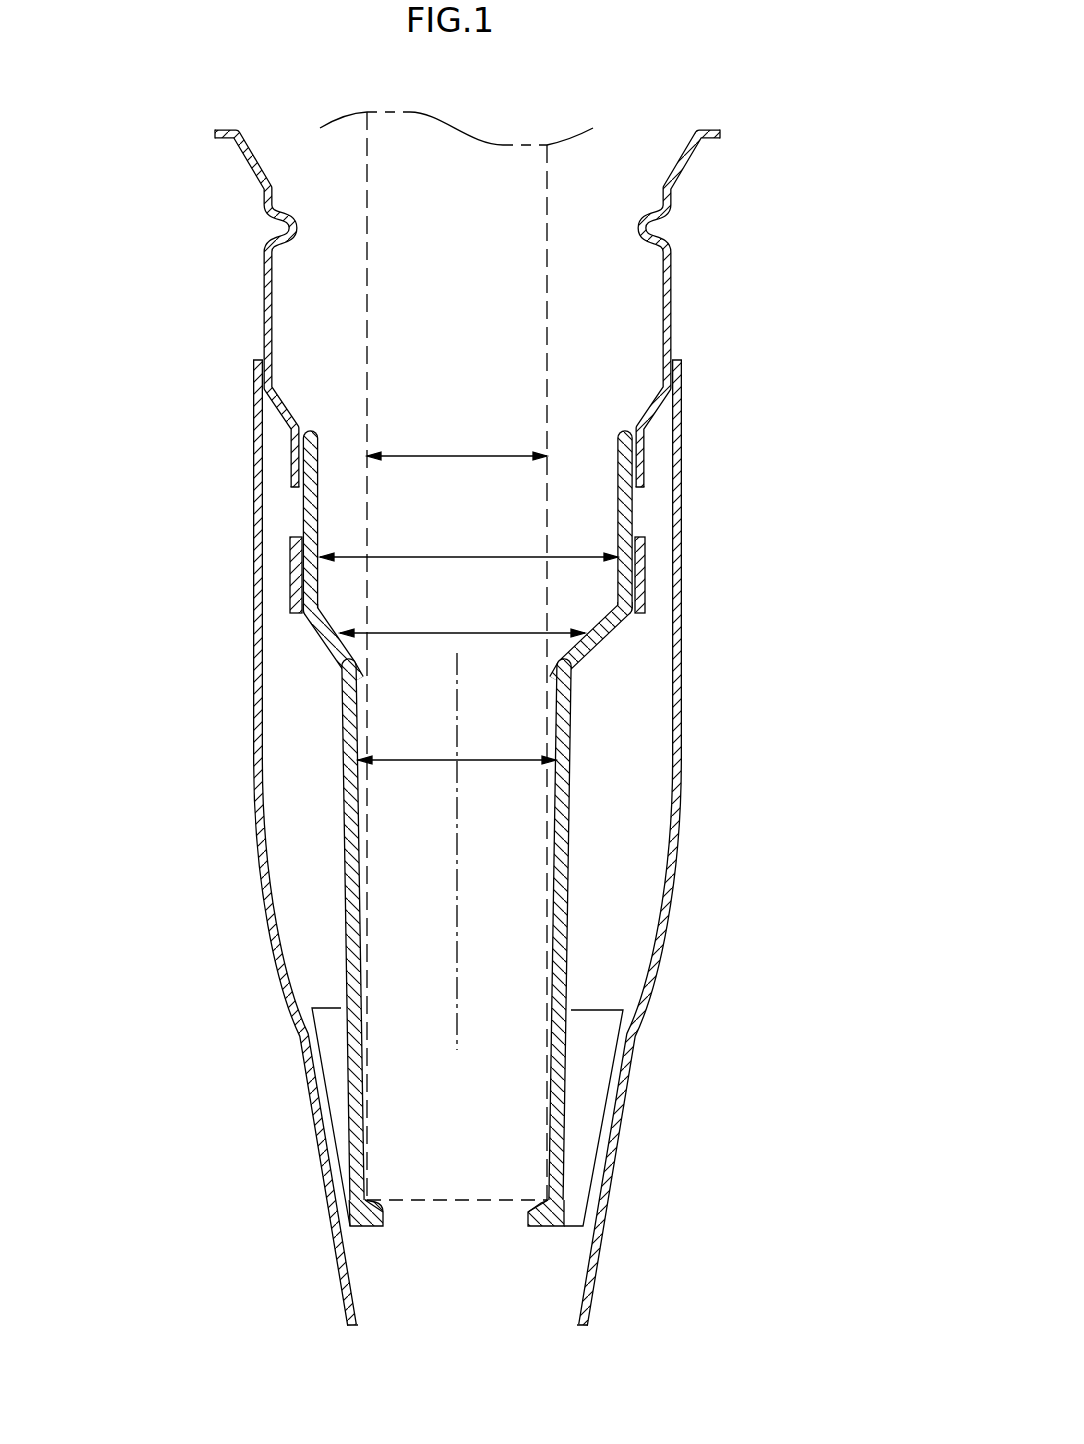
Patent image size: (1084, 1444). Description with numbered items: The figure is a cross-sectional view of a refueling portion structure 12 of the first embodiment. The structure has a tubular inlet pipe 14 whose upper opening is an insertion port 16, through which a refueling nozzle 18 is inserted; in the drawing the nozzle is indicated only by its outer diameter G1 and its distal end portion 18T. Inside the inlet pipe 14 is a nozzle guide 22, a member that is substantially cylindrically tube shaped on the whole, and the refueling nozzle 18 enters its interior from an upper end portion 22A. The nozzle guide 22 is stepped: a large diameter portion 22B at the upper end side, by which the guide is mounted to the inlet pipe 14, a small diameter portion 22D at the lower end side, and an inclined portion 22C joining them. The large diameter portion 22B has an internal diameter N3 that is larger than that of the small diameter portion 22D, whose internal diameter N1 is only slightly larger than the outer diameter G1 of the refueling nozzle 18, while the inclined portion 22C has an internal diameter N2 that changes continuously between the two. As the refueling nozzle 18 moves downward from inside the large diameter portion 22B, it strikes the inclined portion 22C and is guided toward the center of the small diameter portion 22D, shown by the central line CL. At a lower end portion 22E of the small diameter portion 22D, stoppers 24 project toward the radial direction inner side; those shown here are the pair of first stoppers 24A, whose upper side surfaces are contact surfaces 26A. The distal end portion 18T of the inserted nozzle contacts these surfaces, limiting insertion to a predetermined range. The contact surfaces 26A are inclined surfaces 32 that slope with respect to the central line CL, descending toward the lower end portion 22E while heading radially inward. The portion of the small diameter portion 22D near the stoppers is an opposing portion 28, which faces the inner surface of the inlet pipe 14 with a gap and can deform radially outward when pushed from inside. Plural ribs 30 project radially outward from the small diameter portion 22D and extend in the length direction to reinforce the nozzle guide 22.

The refueling portion structure 12 is at (758, 93).
The inlet pipe 14 is at (274, 936).
The insertion port 16 is at (257, 158).
The refueling nozzle 18 is at (550, 177).
The distal end portion 18T is at (402, 1203).
The nozzle guide 22 is at (459, 848).
The upper end portion 22A is at (307, 430).
The large diameter portion 22B is at (620, 505).
The inclined portion 22C is at (588, 640).
The small diameter portion 22D is at (575, 845).
The lower end portion 22E is at (553, 1230).
The stopper 24 is at (467, 932).
The first stopper 24A is at (467, 932).
The contact surface 26A is at (378, 1202).
The inclined surface 32 is at (457, 1155).
The opposing portion 28 is at (348, 1128).
The rib 30 is at (330, 1033).
The outer diameter G1 is at (456, 452).
The internal diameter N1 is at (425, 763).
The internal diameter N2 is at (415, 636).
The internal diameter N3 is at (438, 560).
The central line CL is at (457, 677).